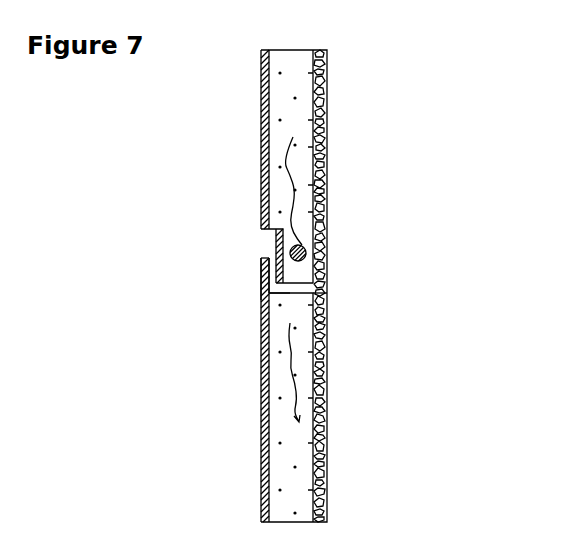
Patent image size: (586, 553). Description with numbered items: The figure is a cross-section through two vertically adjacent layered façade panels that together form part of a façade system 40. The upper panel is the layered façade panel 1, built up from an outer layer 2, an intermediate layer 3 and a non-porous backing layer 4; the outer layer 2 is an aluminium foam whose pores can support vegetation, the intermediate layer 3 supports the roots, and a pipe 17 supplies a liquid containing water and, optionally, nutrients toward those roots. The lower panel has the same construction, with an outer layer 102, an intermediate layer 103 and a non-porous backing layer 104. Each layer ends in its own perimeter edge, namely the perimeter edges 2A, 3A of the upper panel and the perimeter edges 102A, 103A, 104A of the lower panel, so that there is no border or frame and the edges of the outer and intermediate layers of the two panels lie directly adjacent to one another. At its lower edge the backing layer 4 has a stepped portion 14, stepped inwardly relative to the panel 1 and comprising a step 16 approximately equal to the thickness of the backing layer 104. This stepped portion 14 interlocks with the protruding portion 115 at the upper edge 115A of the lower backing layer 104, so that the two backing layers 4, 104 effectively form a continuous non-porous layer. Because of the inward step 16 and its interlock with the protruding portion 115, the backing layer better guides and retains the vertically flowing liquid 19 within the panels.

The façade system 40 is at (350, 105).
The layered façade panel 1 is at (355, 172).
The non-porous backing layer 4 is at (262, 77).
The intermediate layer 3 is at (320, 150).
The outer layer 2 is at (310, 215).
The vertically flowing liquid 19 is at (290, 220).
The first stepped portion 14 is at (264, 236).
The pipe 17 is at (308, 246).
The first step 16 is at (305, 256).
The protruding portion 115 is at (263, 258).
The perimeter edge of non-porous backing layer 104A is at (262, 262).
The upper edge 115A is at (262, 270).
The outer layer 102 is at (325, 325).
The non-porous backing layer 104 is at (262, 433).
The perimeter edge of outer layer 2A is at (327, 286).
The perimeter edge of intermediate layer 3A is at (325, 278).
The perimeter edge of outer layer 102A is at (325, 295).
The perimeter edge of intermediate layer 103A is at (292, 296).
The intermediate layer 103 is at (303, 387).